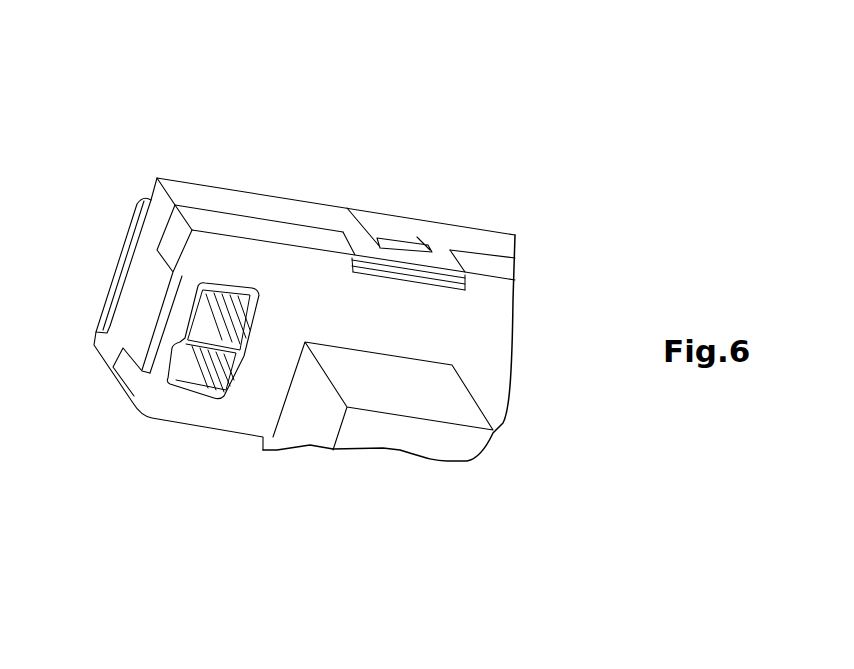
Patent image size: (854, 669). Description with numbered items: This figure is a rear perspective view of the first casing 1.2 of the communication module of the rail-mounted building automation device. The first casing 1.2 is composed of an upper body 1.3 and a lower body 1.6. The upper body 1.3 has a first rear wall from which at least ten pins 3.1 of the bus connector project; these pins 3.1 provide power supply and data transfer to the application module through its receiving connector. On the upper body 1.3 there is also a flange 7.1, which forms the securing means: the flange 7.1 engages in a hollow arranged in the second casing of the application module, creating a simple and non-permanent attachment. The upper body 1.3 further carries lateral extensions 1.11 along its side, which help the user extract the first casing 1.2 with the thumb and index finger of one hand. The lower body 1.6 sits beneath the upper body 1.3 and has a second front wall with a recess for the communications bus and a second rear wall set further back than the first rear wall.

The first casing 1.2 is at (271, 74).
The upper body 1.3 is at (185, 188).
The lateral extension 1.11 is at (120, 262).
The pins 3.1 is at (240, 313).
The flange 7.1 is at (400, 250).
The lower body 1.6 is at (440, 387).